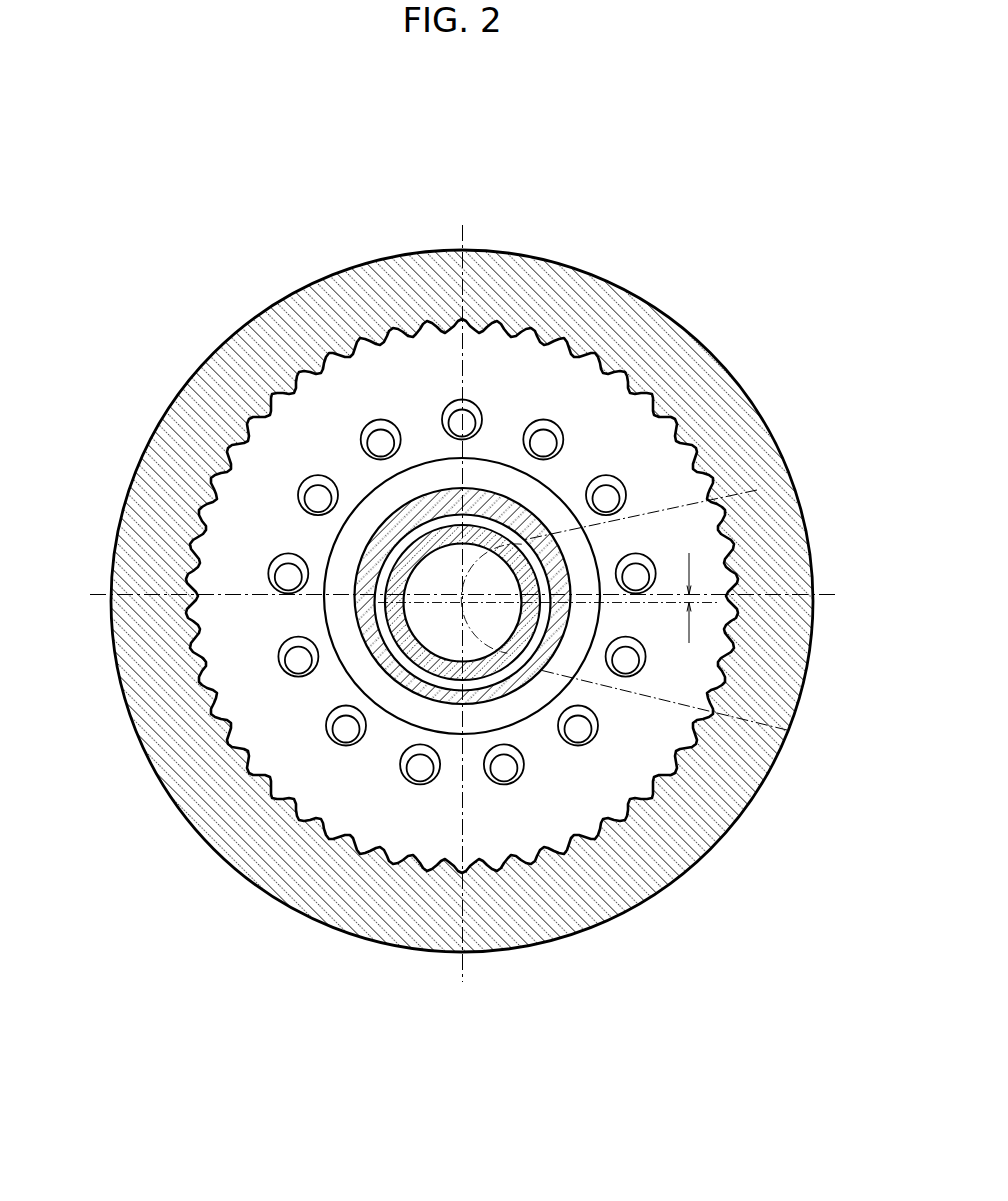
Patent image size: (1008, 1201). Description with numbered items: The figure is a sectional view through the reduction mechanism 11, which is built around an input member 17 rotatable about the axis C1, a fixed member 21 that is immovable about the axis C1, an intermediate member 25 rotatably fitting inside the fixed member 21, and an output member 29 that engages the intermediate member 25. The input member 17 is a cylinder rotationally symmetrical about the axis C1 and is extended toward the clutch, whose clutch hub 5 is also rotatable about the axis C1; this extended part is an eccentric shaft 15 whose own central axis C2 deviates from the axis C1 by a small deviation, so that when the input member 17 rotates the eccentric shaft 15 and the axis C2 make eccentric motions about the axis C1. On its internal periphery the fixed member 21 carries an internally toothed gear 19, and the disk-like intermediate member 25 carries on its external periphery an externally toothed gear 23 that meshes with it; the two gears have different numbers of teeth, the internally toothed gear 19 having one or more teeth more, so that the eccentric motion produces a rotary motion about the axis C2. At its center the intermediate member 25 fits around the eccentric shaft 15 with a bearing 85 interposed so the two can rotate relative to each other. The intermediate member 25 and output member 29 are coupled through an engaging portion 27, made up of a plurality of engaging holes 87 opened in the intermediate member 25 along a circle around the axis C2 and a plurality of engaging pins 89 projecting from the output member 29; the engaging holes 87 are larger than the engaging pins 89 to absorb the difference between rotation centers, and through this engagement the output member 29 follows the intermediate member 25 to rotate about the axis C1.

The reduction mechanism 11 is at (467, 178).
The fixed member 21 is at (595, 270).
The internally toothed gear 19 is at (606, 378).
The externally toothed gear 23 is at (760, 495).
The intermediate member 25 is at (735, 556).
The bearing 85 is at (490, 477).
The input member 17 is at (400, 692).
The eccentric shaft 15 is at (380, 540).
The clutch hub 5 is at (412, 614).
The engaging portion 27 is at (382, 417).
The output member 29 is at (578, 747).
The engaging holes 87 is at (270, 577).
The engaging pins 89 is at (293, 662).
The axis C1 is at (787, 730).
The central axis of the eccentric shaft C2 is at (757, 490).